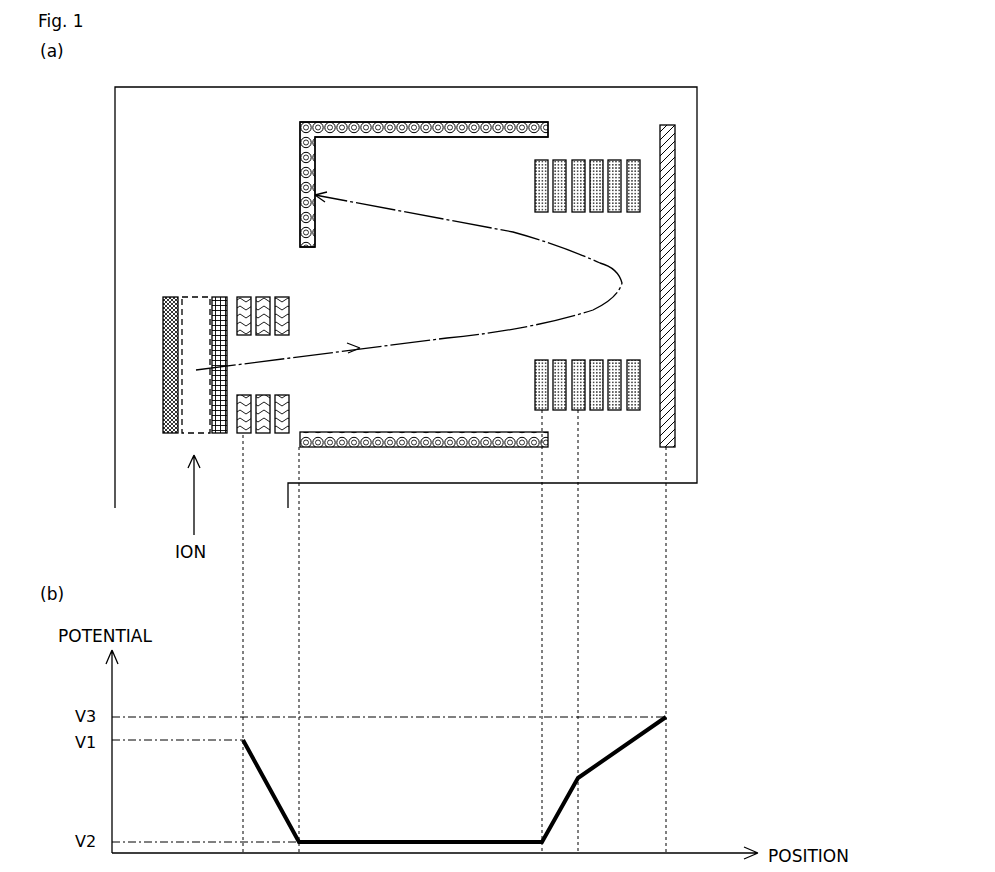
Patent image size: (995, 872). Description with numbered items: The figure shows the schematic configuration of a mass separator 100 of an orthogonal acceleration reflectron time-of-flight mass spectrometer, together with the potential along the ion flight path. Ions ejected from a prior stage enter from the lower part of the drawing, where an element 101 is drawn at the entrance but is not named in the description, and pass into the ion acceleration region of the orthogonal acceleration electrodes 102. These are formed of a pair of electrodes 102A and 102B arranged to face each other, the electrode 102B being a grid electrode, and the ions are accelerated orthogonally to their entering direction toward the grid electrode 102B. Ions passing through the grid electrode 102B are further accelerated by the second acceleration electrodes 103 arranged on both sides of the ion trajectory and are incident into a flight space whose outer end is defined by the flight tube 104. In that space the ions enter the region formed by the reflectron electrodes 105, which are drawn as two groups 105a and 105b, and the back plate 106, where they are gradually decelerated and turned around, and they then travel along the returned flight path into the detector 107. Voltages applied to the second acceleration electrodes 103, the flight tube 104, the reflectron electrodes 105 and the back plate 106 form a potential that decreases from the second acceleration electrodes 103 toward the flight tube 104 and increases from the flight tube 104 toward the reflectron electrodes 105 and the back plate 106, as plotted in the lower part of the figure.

The mass separator 100 is at (113, 160).
The ion source opening 101 is at (188, 433).
The orthogonal acceleration electrodes 102 is at (184, 307).
The electrode 102A is at (172, 297).
The grid electrode 102B is at (218, 297).
The second acceleration electrodes 103 is at (283, 285).
The flight tube 104 is at (402, 447).
The reflectron electrodes 105 is at (590, 354).
The first group of reflectron electrodes 105a is at (583, 415).
The second group of reflectron electrodes 105b is at (618, 308).
The back plate 106 is at (667, 448).
The detector 107 is at (296, 170).